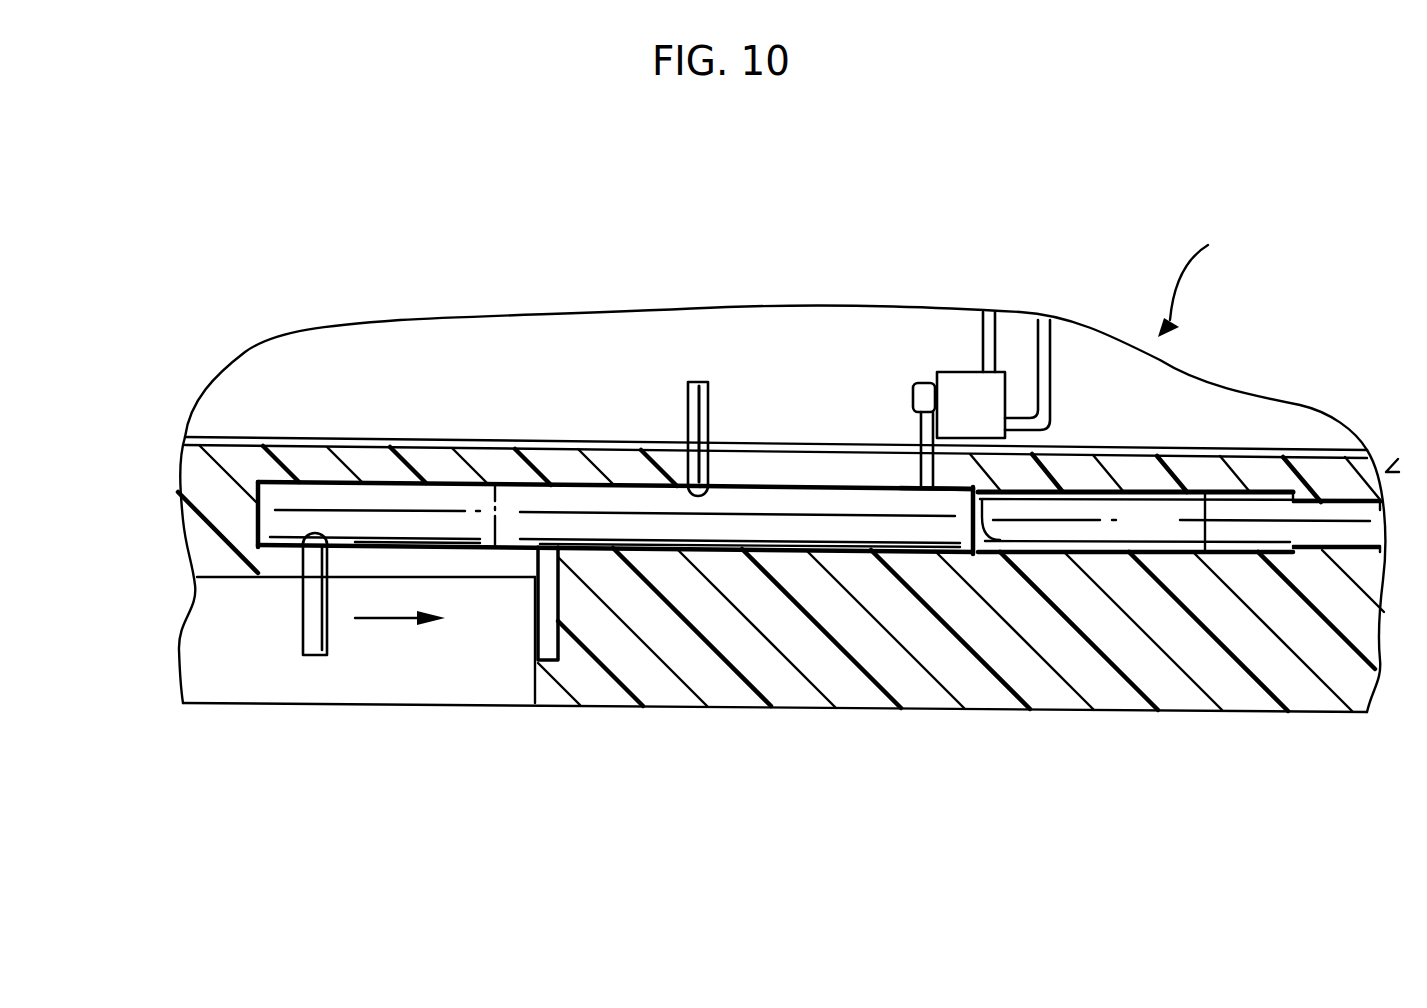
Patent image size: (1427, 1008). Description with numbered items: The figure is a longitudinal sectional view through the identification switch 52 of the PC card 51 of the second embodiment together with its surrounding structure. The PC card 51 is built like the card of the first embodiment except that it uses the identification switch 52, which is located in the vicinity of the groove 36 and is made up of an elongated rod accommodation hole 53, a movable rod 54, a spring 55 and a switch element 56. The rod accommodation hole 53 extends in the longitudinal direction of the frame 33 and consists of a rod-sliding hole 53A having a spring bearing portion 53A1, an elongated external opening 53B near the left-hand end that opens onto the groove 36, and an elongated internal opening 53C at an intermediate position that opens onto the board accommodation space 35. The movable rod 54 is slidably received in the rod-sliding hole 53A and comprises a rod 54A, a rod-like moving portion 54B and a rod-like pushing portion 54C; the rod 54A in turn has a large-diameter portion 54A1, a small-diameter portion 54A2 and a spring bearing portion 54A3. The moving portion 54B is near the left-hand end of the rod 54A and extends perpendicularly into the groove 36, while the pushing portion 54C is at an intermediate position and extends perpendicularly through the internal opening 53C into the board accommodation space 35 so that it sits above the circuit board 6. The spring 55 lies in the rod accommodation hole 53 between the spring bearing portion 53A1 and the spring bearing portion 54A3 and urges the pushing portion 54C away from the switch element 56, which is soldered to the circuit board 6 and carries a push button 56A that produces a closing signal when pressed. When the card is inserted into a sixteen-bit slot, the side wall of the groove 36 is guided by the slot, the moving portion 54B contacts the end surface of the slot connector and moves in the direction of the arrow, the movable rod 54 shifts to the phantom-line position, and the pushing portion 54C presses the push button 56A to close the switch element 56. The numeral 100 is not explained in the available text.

The circuit board 6 is at (567, 345).
The frame 33 is at (1297, 697).
The board accommodation space 35 is at (273, 377).
The groove 36 is at (227, 577).
The PC card 51 is at (1252, 235).
The identification switch 52 is at (793, 578).
The rod accommodation hole 53 is at (627, 487).
The rod-sliding hole 53A is at (449, 484).
The spring bearing portion 53A1 is at (1273, 486).
The external opening 53B is at (557, 553).
The internal opening 53C is at (930, 474).
The movable rod 54 is at (785, 502).
The rod 54A is at (688, 522).
The large-diameter portion 54A1 is at (370, 500).
The small-diameter portion 54A2 is at (1140, 517).
The spring bearing portion 54A3 is at (987, 522).
The moving portion 54B is at (313, 655).
The pushing portion 54C is at (701, 382).
The spring 55 is at (1235, 487).
The switch element 56 is at (988, 395).
The push button 56A is at (928, 383).
The processing chamber 100 is at (1406, 464).